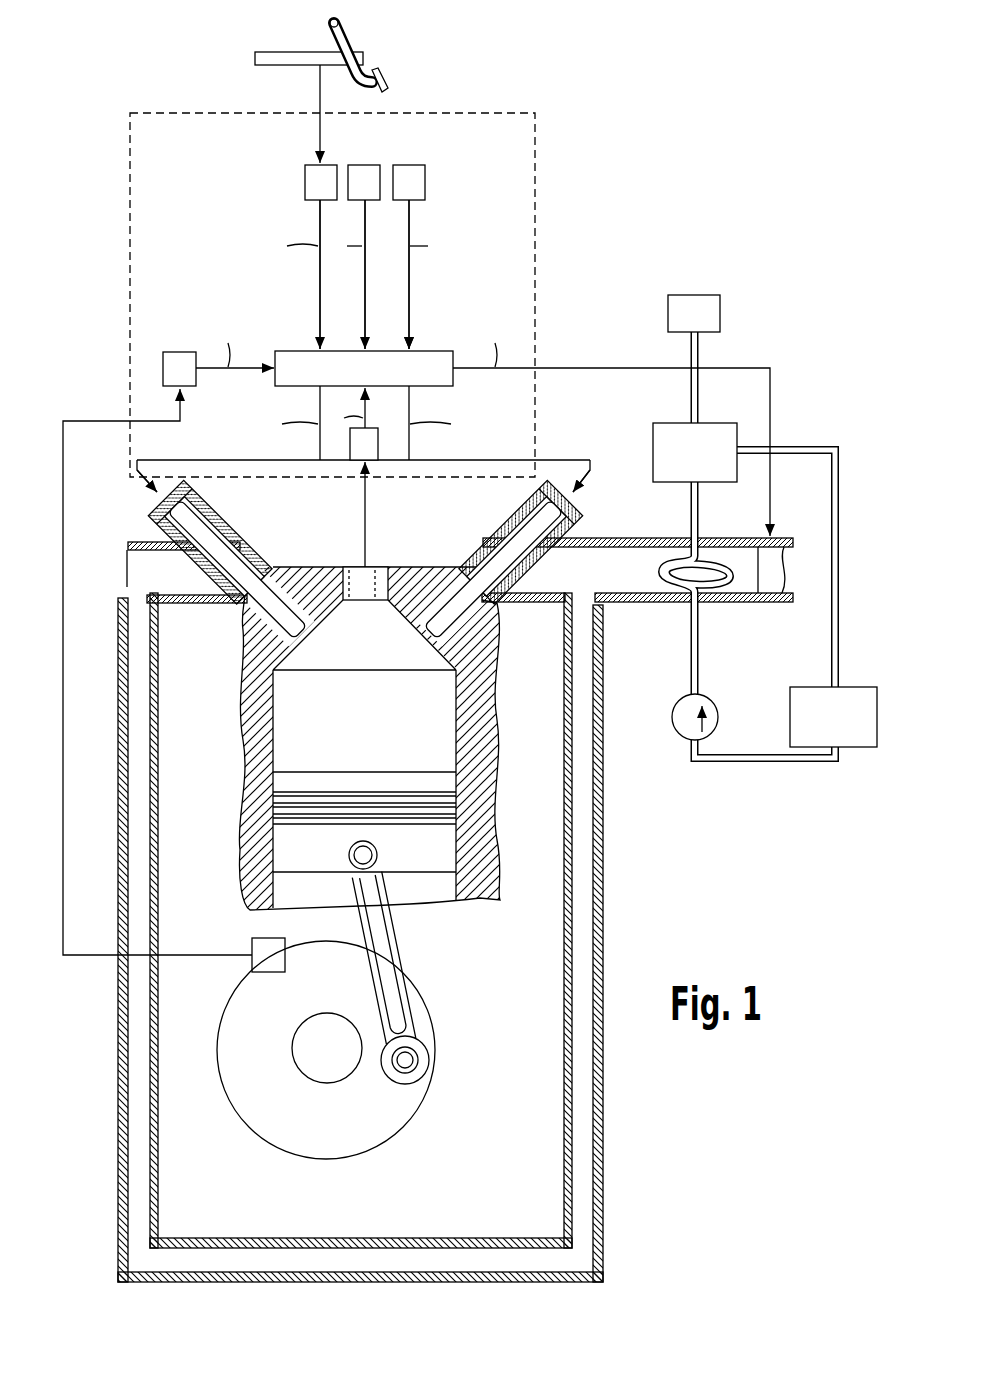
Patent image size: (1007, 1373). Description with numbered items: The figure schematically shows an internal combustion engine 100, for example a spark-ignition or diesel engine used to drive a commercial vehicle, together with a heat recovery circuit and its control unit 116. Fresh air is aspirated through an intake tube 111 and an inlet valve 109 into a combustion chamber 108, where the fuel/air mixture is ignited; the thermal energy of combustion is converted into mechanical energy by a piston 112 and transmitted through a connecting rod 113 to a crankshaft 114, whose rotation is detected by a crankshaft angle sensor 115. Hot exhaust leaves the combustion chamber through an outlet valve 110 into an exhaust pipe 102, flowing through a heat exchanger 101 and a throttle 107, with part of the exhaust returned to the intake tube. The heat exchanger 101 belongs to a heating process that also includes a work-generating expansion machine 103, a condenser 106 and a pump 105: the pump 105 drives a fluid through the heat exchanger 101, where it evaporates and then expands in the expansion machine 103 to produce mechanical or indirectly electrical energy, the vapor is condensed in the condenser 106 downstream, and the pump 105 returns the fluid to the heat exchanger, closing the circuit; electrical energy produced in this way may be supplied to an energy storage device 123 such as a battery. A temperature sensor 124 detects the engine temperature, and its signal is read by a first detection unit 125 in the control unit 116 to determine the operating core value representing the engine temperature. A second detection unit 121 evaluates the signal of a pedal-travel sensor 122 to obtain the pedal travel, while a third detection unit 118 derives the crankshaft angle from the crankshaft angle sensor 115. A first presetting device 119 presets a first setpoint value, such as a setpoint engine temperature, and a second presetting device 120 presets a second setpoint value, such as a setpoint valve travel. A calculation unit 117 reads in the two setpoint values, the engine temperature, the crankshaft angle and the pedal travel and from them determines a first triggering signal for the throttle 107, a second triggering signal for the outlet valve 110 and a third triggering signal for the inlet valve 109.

The internal combustion engine 100 is at (714, 257).
The heat exchanger 101 is at (666, 583).
The exhaust pipe 102 is at (537, 578).
The expansion machine 103 is at (688, 455).
The pump 105 is at (671, 717).
The condenser 106 is at (830, 716).
The throttle 107 is at (771, 580).
The combustion chamber 108 is at (313, 690).
The inlet valve 109 is at (157, 512).
The outlet valve 110 is at (574, 512).
The intake tube 111 is at (184, 573).
The piston 112 is at (386, 785).
The connecting rod 113 is at (395, 944).
The crankshaft 114 is at (330, 1128).
The crankshaft angle sensor 115 is at (268, 958).
The control unit 116 is at (538, 287).
The calculation unit 117 is at (430, 367).
The third detection unit 118 is at (178, 366).
The first presetting device 119 is at (362, 183).
The second presetting device 120 is at (410, 183).
The second detection unit 121 is at (318, 183).
The pedal-travel sensor 122 is at (352, 57).
The energy storage device 123 is at (695, 313).
The temperature sensor 124 is at (345, 572).
The first detection unit 125 is at (350, 455).